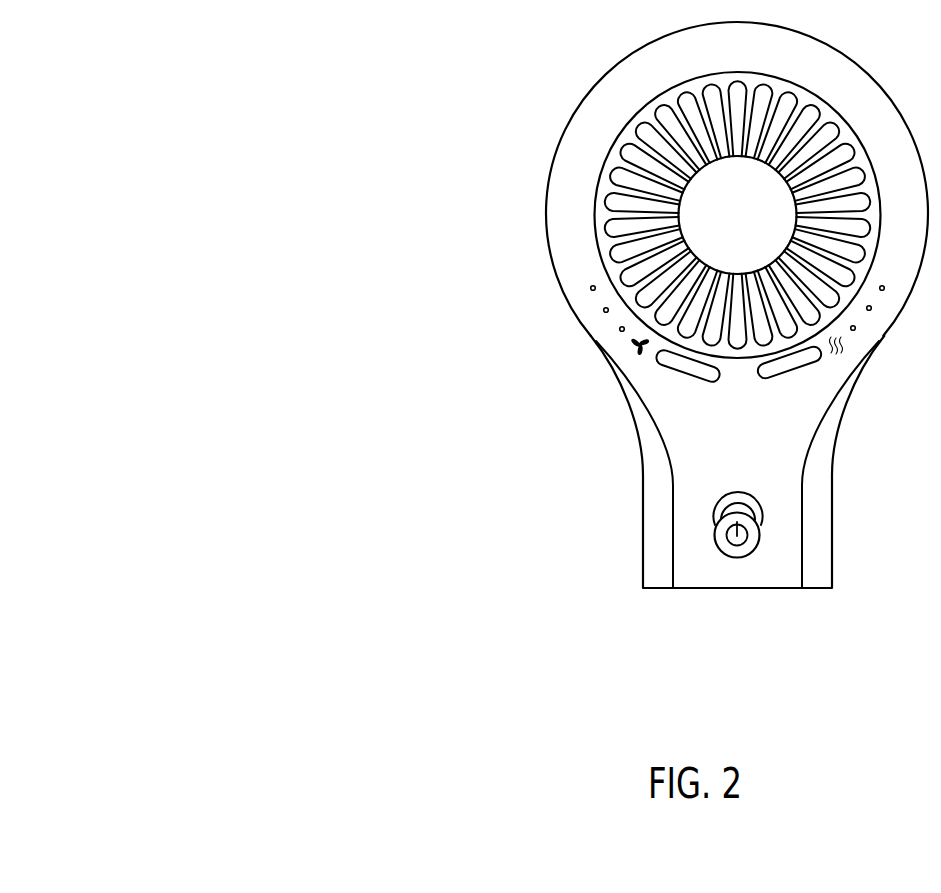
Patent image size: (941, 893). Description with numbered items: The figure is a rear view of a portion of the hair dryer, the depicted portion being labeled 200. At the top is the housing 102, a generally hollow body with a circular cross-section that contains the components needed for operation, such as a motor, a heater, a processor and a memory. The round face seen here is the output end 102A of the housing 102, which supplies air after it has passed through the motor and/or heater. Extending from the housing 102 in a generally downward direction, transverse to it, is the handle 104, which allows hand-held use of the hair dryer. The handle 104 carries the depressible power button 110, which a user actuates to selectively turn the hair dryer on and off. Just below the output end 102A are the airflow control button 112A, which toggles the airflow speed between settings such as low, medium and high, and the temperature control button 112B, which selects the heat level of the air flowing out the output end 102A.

The hair dryer device 200 is at (79, 121).
The housing 102 is at (606, 77).
The output end 102A is at (583, 187).
The handle 104 is at (642, 476).
The power button 110 is at (762, 524).
The airflow control button 112A is at (685, 378).
The temperature control button 112B is at (778, 378).